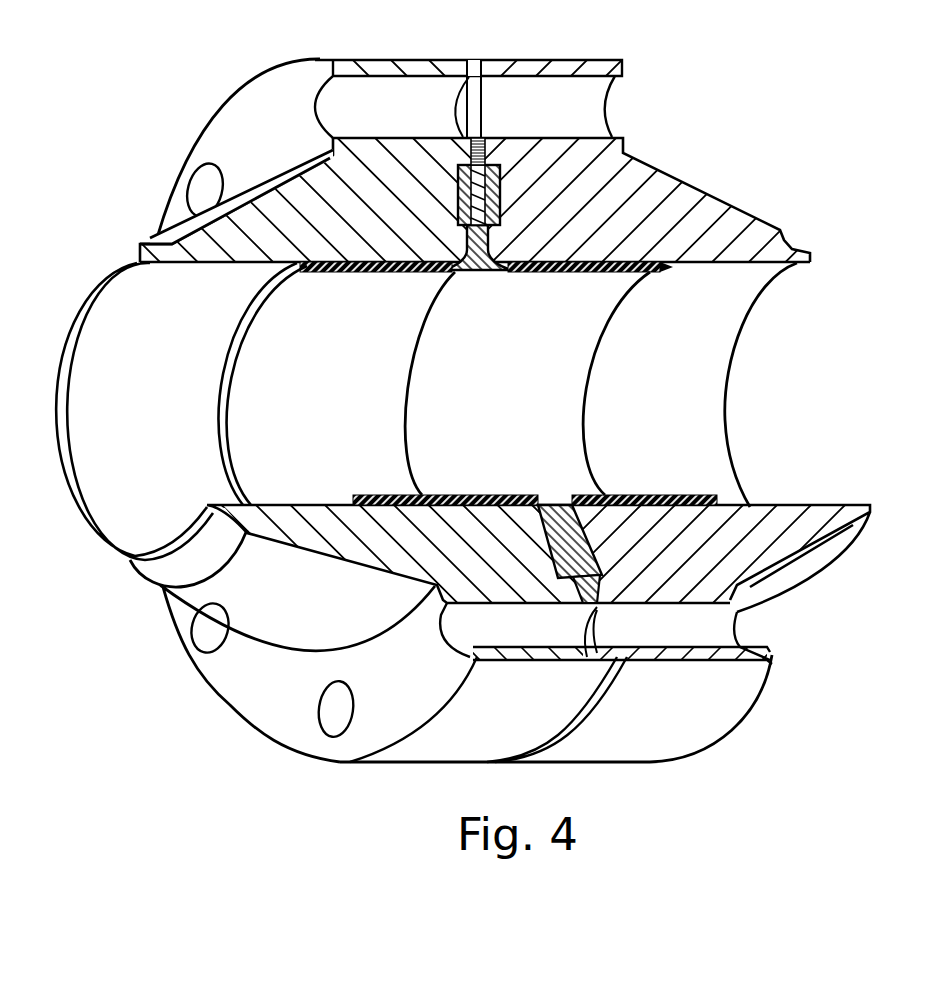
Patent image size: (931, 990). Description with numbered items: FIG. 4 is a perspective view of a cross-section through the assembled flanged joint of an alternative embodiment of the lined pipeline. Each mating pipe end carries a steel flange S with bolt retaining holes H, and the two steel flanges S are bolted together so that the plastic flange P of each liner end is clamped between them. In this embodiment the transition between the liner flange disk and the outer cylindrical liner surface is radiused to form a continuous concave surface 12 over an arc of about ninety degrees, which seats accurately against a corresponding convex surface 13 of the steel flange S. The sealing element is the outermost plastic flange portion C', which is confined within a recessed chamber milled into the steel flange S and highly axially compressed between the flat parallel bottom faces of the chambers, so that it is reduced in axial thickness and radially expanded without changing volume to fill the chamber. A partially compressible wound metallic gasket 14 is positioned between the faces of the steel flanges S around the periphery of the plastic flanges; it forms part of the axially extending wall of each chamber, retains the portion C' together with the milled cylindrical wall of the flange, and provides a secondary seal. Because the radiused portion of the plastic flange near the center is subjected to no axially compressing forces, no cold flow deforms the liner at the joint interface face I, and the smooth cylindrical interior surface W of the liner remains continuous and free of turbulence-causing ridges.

The plastic flange P is at (327, 160).
The bolt retaining holes H is at (337, 98).
The steel flange S is at (307, 193).
The wound metallic gasket 14 is at (481, 140).
The convex surface 13 is at (497, 247).
The concave surface 12 is at (505, 255).
The plastic flange portion C' is at (473, 190).
The joint interface face I is at (397, 363).
The interior surface W is at (500, 315).